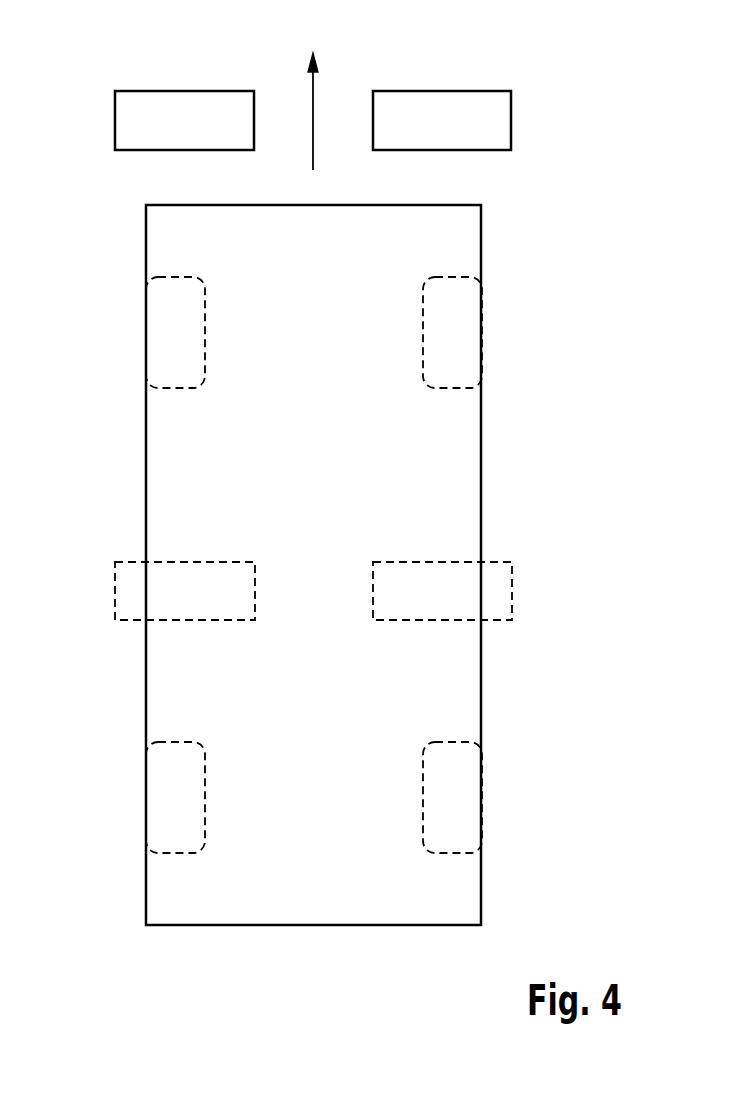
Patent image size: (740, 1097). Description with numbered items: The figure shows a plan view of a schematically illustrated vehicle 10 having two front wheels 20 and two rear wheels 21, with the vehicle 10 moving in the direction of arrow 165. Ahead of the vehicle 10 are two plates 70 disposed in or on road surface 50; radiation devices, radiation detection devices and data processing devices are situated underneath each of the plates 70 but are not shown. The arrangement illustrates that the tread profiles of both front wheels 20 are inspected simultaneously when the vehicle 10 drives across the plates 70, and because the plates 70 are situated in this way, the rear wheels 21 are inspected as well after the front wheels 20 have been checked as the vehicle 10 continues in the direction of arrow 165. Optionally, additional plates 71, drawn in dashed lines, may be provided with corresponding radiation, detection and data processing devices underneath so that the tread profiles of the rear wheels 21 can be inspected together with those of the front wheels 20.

The vehicle 10 is at (558, 457).
The front wheels 20 is at (133, 318).
The rear wheels 21 is at (133, 783).
The road surface 50 is at (570, 136).
The plates 70 is at (183, 91).
The plates 71 is at (115, 600).
The arrow 165 is at (313, 120).